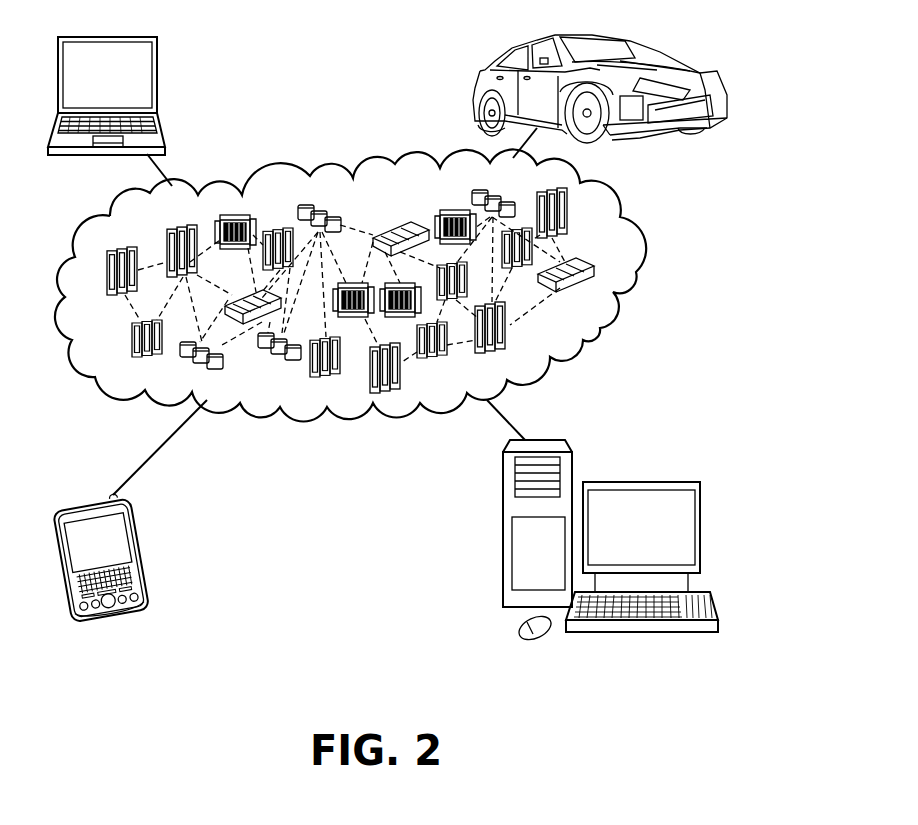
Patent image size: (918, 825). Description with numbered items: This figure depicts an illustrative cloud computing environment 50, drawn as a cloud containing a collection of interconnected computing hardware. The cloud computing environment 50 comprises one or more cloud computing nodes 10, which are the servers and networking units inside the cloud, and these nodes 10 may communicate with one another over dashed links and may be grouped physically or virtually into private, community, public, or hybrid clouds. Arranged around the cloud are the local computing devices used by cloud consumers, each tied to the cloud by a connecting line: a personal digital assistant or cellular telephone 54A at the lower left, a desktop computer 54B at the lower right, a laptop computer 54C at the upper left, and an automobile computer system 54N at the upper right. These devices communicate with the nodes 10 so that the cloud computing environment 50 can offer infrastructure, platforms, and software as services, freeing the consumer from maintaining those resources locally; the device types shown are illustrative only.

The cloud computing node 10 is at (622, 322).
The cloud computing environment 50 is at (382, 285).
The personal digital assistant or cellular telephone 54A is at (153, 552).
The desktop computer 54B is at (703, 513).
The laptop computer 54C is at (158, 86).
The automobile computer system 54N is at (480, 89).